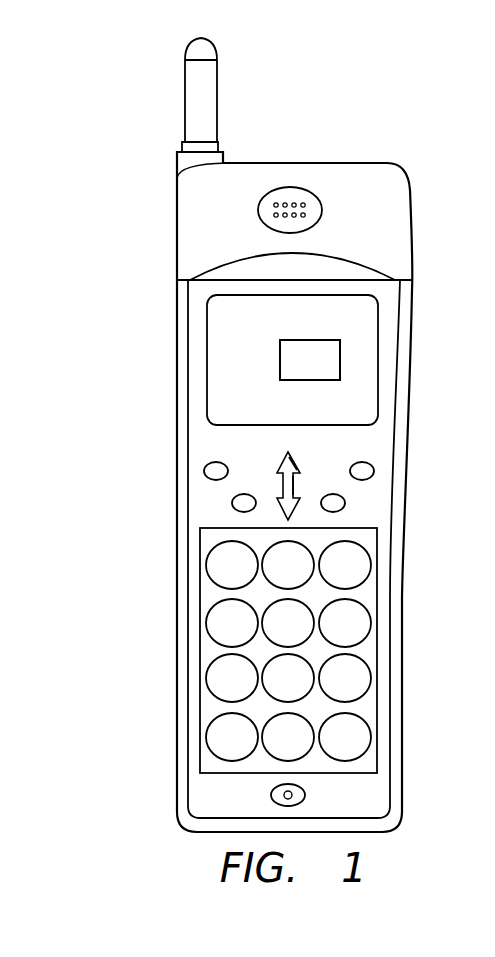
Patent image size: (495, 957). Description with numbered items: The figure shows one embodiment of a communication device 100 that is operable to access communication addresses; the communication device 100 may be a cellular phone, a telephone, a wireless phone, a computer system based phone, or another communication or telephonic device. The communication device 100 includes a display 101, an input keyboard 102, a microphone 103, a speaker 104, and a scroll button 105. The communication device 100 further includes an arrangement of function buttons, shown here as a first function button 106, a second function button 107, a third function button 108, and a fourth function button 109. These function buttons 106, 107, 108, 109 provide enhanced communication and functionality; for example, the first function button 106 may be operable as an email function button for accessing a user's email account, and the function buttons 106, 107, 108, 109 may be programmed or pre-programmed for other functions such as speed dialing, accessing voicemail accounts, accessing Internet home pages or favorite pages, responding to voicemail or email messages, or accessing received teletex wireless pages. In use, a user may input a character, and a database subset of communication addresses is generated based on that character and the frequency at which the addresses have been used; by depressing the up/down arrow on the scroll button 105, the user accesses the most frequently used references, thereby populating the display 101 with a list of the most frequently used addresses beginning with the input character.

The communication device 100 is at (334, 126).
The display 101 is at (275, 343).
The input keyboard 102 is at (212, 648).
The microphone 103 is at (271, 795).
The speaker 104 is at (259, 210).
The scroll button 105 is at (187, 98).
The first function button 106 is at (203, 470).
The second function button 107 is at (231, 503).
The third function button 108 is at (346, 503).
The fourth function button 109 is at (375, 471).